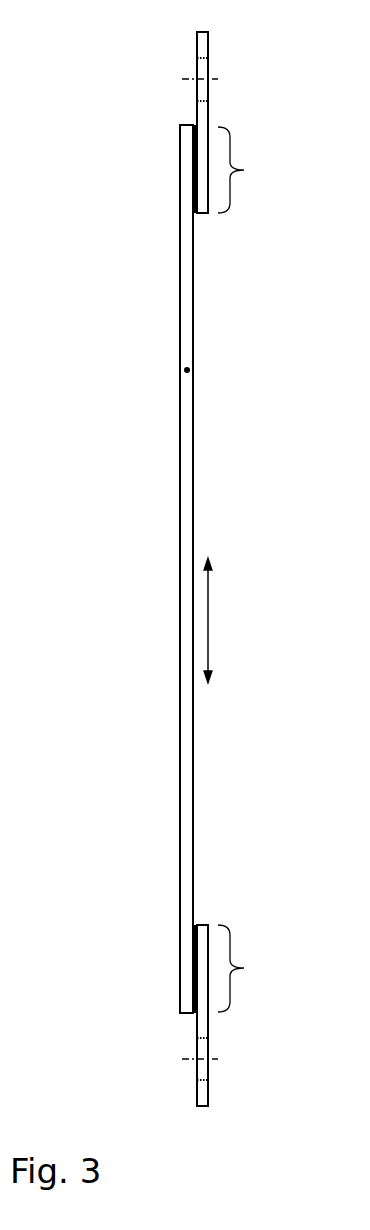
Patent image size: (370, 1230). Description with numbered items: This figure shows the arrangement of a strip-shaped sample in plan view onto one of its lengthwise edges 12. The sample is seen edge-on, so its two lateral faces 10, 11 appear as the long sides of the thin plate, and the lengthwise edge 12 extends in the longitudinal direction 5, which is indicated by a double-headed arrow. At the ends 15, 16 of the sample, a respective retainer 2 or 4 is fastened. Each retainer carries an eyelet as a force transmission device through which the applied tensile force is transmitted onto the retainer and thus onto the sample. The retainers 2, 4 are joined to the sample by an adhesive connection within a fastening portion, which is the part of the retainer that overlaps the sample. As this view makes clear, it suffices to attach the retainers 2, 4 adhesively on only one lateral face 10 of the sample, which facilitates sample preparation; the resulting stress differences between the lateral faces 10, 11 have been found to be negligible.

The retainer 2 is at (197, 45).
The retainer 4 is at (197, 1090).
The longitudinal direction 5 is at (218, 620).
The lateral face 10 is at (236, 507).
The lateral face 11 is at (181, 447).
The lengthwise edge 12 is at (185, 370).
The end of the sample 15 is at (164, 146).
The end of the sample 16 is at (160, 997).